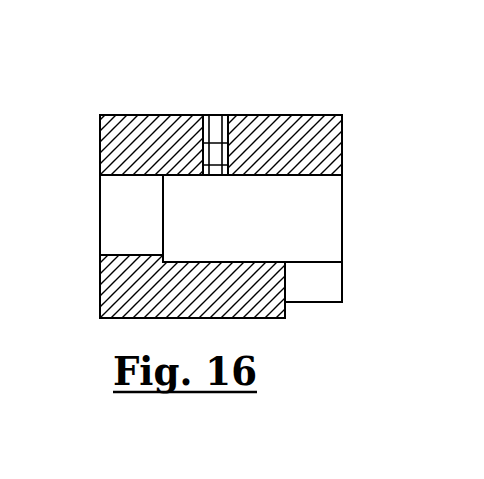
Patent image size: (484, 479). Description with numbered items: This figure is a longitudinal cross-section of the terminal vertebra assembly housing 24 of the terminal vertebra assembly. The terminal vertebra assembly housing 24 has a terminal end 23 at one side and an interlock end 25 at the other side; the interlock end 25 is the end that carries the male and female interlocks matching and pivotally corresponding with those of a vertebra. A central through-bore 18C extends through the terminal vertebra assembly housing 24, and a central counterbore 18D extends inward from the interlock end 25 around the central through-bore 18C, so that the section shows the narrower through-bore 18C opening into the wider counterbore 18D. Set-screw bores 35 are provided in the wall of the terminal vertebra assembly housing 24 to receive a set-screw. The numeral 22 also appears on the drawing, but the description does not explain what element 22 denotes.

The upper wall of housing 22 is at (167, 115).
The outer side surface 23 is at (98, 118).
The top end face 24 is at (197, 88).
The right end portion 25 is at (342, 132).
The threaded hole 35 is at (220, 115).
The bore section C 18C is at (135, 215).
The bore section D 18D is at (308, 225).